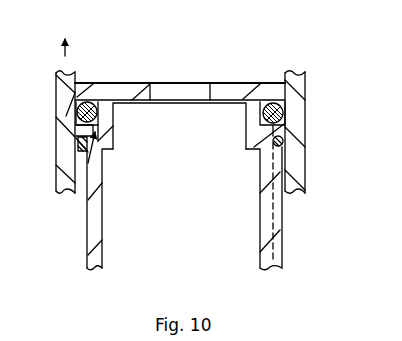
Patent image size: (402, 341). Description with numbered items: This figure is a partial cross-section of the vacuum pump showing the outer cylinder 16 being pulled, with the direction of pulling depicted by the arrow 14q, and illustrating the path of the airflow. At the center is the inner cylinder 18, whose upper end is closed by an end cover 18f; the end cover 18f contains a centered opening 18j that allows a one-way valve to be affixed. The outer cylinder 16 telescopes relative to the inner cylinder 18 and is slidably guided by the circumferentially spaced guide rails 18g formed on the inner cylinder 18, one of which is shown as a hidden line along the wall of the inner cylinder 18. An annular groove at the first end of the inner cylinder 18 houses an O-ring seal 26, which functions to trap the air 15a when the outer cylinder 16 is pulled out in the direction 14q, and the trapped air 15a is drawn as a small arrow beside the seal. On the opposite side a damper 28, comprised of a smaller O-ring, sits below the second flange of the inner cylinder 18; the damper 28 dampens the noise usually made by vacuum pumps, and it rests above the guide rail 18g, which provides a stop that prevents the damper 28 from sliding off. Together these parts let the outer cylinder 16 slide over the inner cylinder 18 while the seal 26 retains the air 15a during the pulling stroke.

The pulling direction 14q is at (69, 34).
The air 15a is at (83, 152).
The outer cylinder 16 is at (295, 128).
The inner cylinder 18 is at (95, 238).
The end cover 18f is at (263, 93).
The guide rails 18g is at (283, 229).
The centered opening 18j is at (193, 92).
The O-ring seal 26 is at (99, 103).
The damper 28 is at (302, 142).